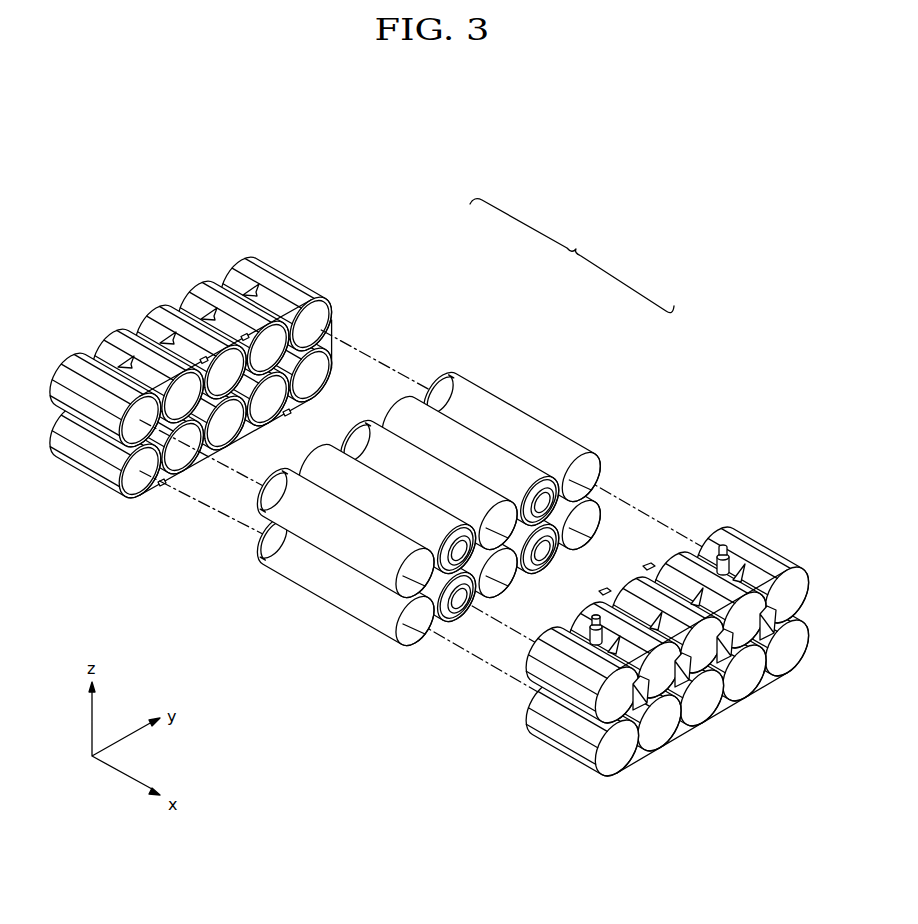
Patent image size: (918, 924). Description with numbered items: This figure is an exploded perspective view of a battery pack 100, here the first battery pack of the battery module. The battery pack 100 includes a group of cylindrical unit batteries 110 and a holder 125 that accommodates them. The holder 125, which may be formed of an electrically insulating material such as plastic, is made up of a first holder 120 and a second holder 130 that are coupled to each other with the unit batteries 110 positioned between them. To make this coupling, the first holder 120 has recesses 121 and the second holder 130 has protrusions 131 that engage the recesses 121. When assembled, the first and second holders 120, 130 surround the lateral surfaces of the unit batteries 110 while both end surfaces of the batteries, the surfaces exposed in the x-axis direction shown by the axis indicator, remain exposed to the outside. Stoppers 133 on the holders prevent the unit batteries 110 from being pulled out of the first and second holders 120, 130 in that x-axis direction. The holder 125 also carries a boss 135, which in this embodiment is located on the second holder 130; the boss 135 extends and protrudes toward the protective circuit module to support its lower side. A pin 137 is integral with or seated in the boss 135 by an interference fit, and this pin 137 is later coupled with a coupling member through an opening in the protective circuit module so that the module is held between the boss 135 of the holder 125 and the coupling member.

The battery pack 100 is at (662, 219).
The unit batteries 110 is at (513, 427).
The first holder 120 is at (343, 296).
The recesses 121 is at (207, 303).
The holder 125 is at (572, 256).
The second holder 130 is at (712, 527).
The protrusions 131 is at (645, 567).
The stoppers 133 is at (735, 690).
The boss 135 is at (598, 641).
The pin 137 is at (592, 625).